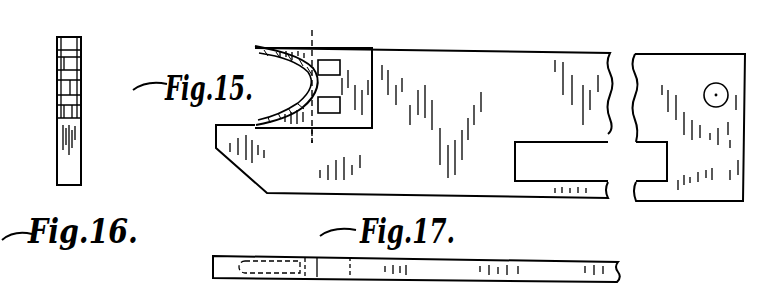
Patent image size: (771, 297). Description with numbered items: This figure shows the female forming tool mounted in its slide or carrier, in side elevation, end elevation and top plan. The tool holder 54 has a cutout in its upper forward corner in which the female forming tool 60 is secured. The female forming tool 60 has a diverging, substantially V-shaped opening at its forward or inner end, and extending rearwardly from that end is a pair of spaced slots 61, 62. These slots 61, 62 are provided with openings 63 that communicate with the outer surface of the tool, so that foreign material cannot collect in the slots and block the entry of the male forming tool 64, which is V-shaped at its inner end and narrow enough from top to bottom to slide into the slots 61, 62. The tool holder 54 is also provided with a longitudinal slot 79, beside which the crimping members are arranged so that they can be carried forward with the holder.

In FIG. 15, the tool holder 54 is at (507, 62).
In FIG. 16, the female forming tool 60 is at (82, 80).
In FIG. 15, the female forming tool 60 is at (358, 58).
In FIG. 17, the female forming tool 60 is at (330, 260).
In FIG. 15, the slot 61 is at (322, 83).
In FIG. 15, the slot 62 is at (303, 148).
In FIG. 15, the openings 63 is at (329, 62).
In FIG. 15, the male forming tool 64 is at (256, 46).
In FIG. 15, the longitudinal slot 79 is at (594, 170).